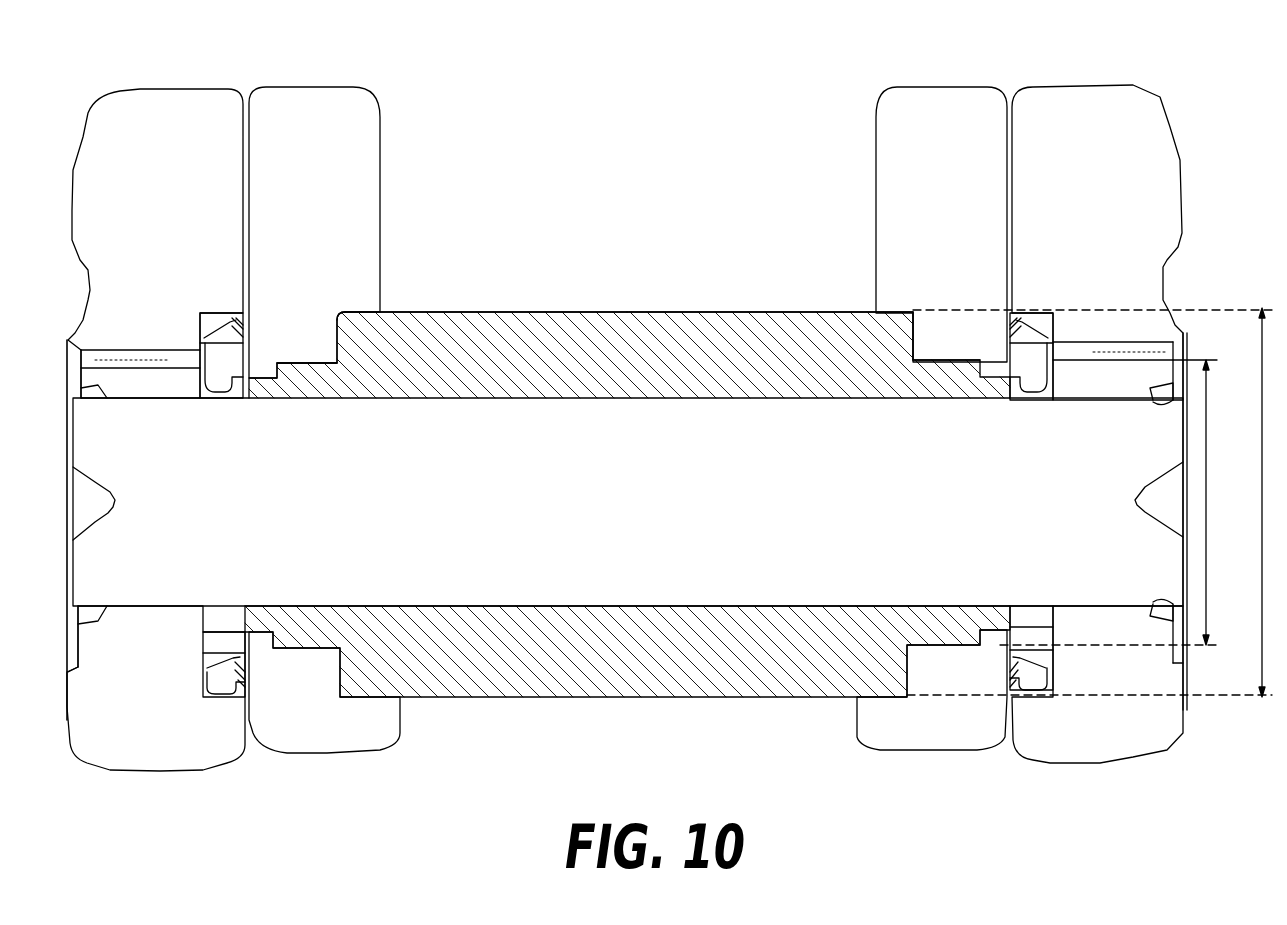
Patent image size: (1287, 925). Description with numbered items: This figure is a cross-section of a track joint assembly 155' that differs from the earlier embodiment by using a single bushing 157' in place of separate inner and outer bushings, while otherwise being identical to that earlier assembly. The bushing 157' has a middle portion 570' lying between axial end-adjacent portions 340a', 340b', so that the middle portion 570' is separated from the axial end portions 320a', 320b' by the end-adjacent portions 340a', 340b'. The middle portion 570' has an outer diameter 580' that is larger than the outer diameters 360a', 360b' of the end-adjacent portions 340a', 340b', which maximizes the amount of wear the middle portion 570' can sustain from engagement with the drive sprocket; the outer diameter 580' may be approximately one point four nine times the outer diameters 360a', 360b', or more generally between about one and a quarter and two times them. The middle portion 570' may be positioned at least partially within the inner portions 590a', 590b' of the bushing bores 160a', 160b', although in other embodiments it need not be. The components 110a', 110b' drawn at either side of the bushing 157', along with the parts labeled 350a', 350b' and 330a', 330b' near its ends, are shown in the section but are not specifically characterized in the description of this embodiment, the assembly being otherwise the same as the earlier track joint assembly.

The track joint assembly 155' is at (665, 394).
The first housing block 110a' is at (233, 401).
The second housing block 110b' is at (1020, 397).
The bushing 157' is at (627, 487).
The middle portion 570' is at (629, 255).
The first sleeve portion 350a' is at (627, 488).
The second sleeve portion 350b' is at (818, 323).
The first flange 330a' is at (152, 350).
The second flange 330b' is at (945, 344).
The bushing bore 160a' is at (325, 441).
The bushing bore 160b' is at (934, 407).
The axial end portion 320a' is at (322, 416).
The axial end portion 320b' is at (941, 376).
The axial end-adjacent portion 340a' is at (375, 289).
The axial end-adjacent portion 340b' is at (889, 267).
The inner portion of bushing bore 590a' is at (406, 295).
The inner portion of bushing bore 590b' is at (860, 302).
The outer diameter 360a' is at (1215, 502).
The outer diameter 360b' is at (1129, 548).
The outer diameter 580' is at (1089, 502).